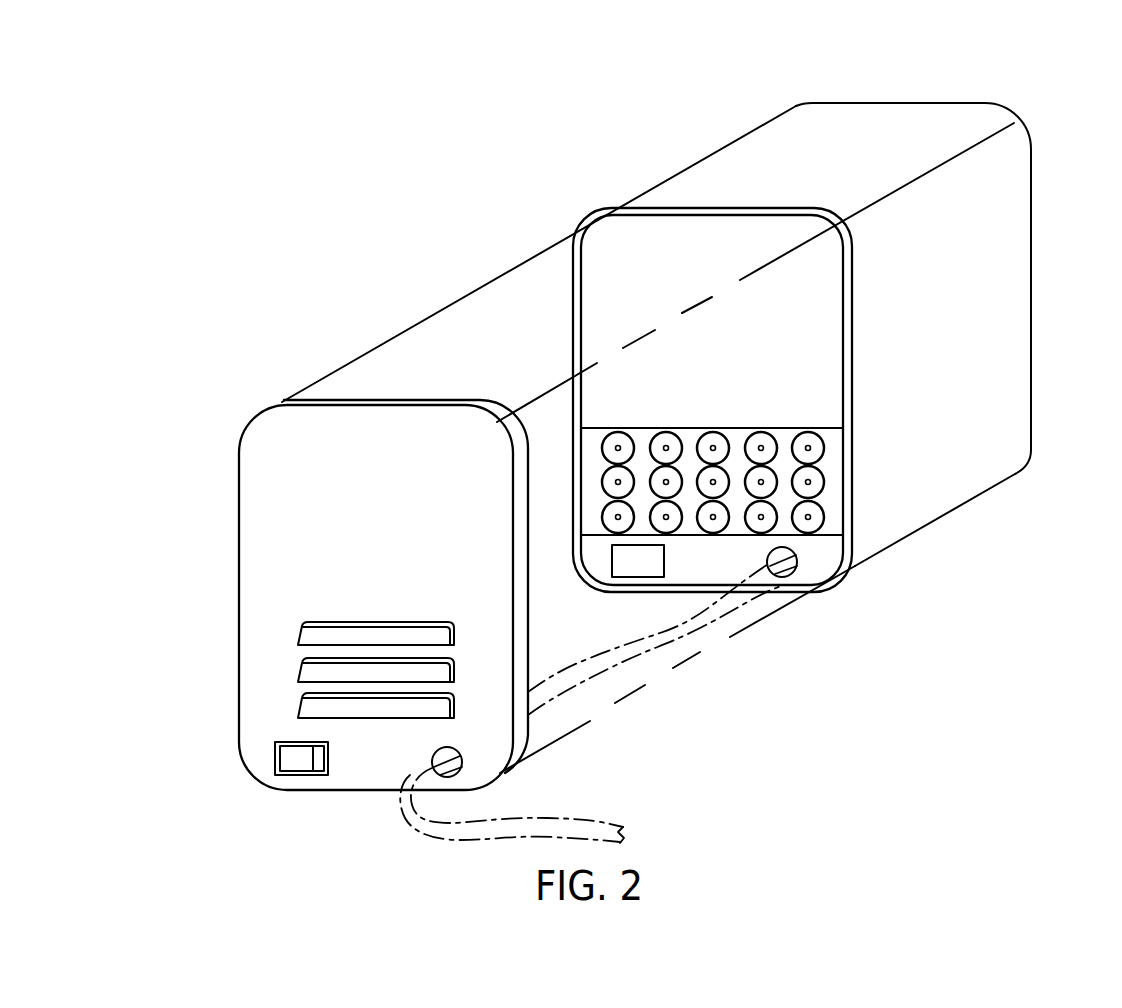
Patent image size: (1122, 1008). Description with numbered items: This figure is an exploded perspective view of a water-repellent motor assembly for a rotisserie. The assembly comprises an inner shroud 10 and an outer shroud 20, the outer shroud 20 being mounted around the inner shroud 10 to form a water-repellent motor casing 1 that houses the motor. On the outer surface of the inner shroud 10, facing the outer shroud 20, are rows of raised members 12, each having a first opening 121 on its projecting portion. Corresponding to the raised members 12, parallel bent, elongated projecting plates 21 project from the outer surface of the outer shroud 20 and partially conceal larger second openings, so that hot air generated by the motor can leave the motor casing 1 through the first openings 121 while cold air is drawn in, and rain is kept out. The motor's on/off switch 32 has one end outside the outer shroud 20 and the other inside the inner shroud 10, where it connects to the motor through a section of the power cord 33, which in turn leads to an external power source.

The motor casing 1 is at (1081, 184).
The inner shroud 10 is at (850, 392).
The raised members 12 is at (818, 453).
The first opening 121 is at (761, 522).
The outer shroud 20 is at (893, 112).
The projecting plates 21 is at (310, 707).
The on/off switch 32 is at (292, 765).
The power cord 33 is at (560, 828).